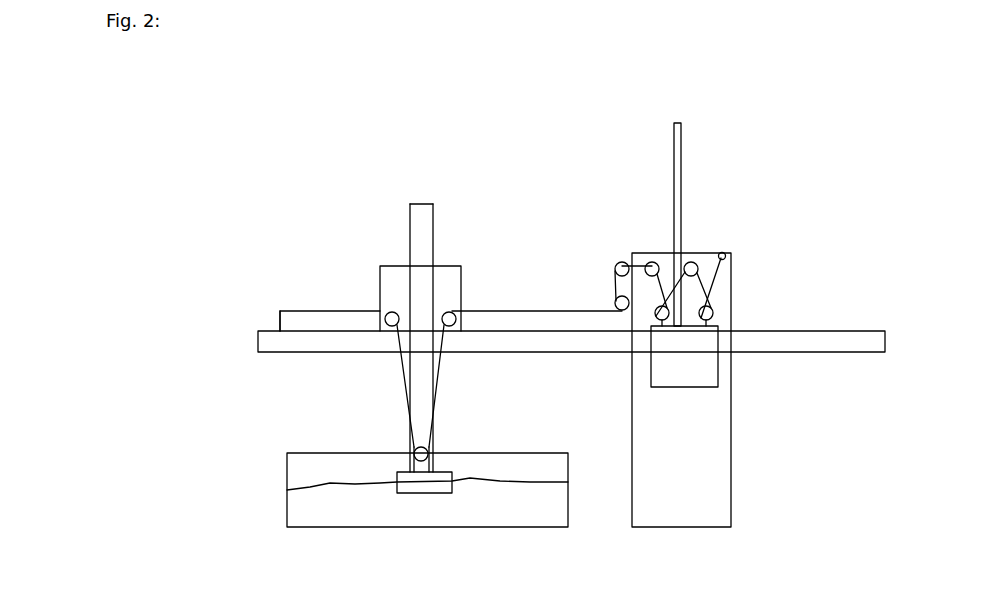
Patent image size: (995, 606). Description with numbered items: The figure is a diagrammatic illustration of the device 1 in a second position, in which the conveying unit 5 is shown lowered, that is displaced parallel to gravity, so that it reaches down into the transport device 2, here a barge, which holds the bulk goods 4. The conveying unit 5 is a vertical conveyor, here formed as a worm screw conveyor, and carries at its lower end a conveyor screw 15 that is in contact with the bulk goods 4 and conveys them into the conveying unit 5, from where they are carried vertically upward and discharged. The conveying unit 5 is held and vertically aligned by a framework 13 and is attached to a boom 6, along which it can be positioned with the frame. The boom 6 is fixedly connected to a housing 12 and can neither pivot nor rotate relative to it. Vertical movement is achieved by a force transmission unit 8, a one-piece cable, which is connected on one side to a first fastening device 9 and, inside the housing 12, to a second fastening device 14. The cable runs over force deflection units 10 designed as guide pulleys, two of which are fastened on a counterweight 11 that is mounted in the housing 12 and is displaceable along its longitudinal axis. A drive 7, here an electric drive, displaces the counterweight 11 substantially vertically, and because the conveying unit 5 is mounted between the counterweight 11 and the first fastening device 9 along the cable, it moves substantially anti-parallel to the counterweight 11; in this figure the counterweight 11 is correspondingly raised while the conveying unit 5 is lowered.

The device 1 is at (550, 160).
The transport device 2 is at (302, 450).
The bulk goods 4 is at (320, 502).
The conveying unit 5 is at (419, 204).
The boom 6 is at (305, 343).
The drive 7 is at (681, 240).
The force transmission unit 8 is at (311, 311).
The first fastening device 9 is at (280, 323).
The force deflection units 10 is at (617, 297).
The counterweight 11 is at (718, 384).
The housing 12 is at (731, 288).
The framework 13 is at (382, 282).
The second fastening device 14 is at (724, 253).
The conveyor screw 15 is at (420, 493).